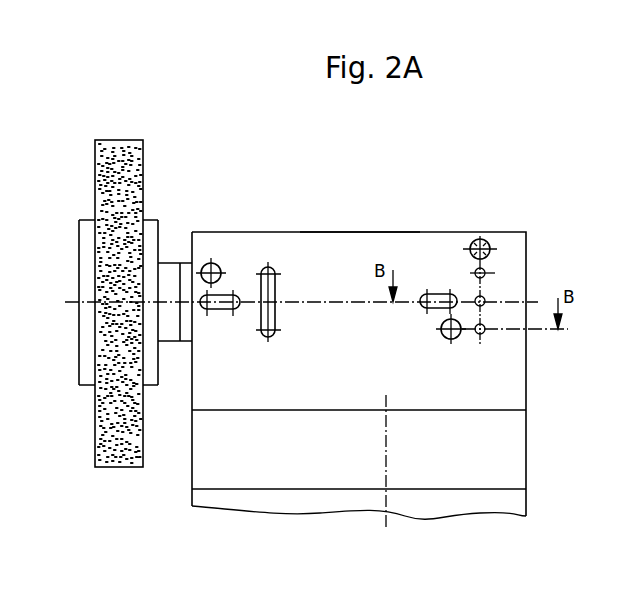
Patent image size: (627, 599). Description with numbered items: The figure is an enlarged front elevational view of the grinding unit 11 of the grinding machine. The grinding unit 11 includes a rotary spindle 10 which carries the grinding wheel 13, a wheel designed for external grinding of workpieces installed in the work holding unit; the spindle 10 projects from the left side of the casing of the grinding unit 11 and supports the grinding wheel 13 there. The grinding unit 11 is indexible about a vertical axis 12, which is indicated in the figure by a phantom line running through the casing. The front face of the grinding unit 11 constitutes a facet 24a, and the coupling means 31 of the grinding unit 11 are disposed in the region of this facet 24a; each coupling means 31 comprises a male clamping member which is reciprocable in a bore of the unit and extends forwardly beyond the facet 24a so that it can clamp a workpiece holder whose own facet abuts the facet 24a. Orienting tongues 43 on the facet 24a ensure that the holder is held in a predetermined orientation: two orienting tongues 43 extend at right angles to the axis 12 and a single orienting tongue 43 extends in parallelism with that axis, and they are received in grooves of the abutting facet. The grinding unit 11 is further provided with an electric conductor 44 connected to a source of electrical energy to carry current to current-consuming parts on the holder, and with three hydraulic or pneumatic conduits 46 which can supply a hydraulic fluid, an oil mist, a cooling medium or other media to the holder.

The grinding wheel 13 is at (142, 150).
The rotary spindle 10 is at (167, 267).
The grinding unit 11 is at (510, 453).
The vertical axis 12 is at (388, 503).
The facet 24a is at (352, 258).
The coupling means 31 is at (219, 267).
The orienting tongue 43 is at (278, 273).
The electric conductor 44 is at (487, 240).
The hydraulic or pneumatic conduit 46 is at (486, 328).